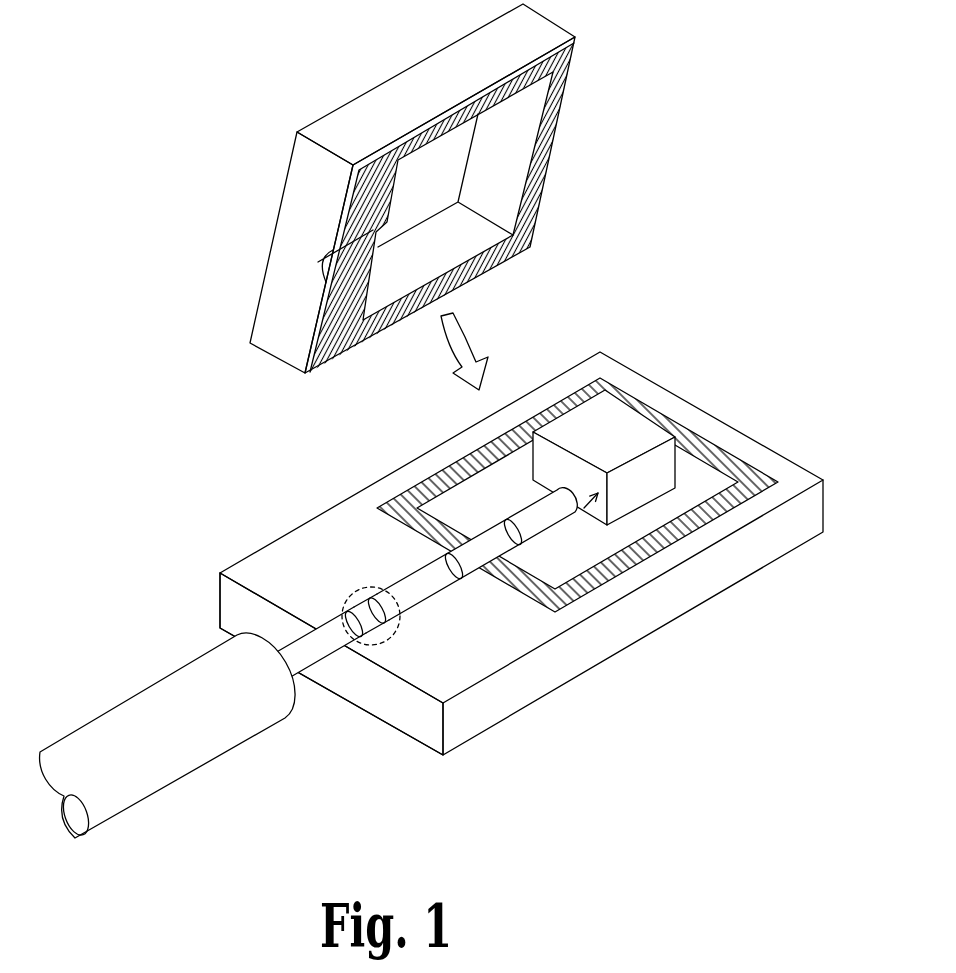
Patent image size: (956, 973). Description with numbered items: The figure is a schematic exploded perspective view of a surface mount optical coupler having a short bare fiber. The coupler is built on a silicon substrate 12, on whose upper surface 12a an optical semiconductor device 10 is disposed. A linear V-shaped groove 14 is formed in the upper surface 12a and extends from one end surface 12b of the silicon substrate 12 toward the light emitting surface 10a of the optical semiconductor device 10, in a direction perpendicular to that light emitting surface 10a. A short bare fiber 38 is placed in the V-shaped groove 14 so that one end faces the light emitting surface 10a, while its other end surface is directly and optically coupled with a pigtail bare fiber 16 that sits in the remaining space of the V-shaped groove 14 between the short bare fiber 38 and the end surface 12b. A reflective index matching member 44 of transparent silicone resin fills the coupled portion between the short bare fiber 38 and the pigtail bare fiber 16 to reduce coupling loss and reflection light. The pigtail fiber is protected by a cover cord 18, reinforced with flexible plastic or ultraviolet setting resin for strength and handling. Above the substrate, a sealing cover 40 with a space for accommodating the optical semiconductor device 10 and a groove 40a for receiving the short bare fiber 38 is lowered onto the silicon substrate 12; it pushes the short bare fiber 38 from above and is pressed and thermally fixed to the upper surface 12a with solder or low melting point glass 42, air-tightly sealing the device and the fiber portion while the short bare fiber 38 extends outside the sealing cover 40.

The optical semiconductor device 10 is at (617, 428).
The light emitting surface 10a is at (583, 513).
The silicon substrate 12 is at (728, 560).
The upper surface 12a is at (783, 487).
The end surface 12b is at (428, 722).
The V-shaped groove 14 is at (378, 627).
The pigtail bare fiber 16 is at (322, 648).
The cover cord 18 is at (160, 723).
The short bare fiber 38 is at (423, 583).
The sealing cover 40 is at (358, 128).
The groove 40a is at (347, 270).
The solder or low melting point glass 42 is at (565, 100).
The reflective index matching member 44 is at (348, 592).